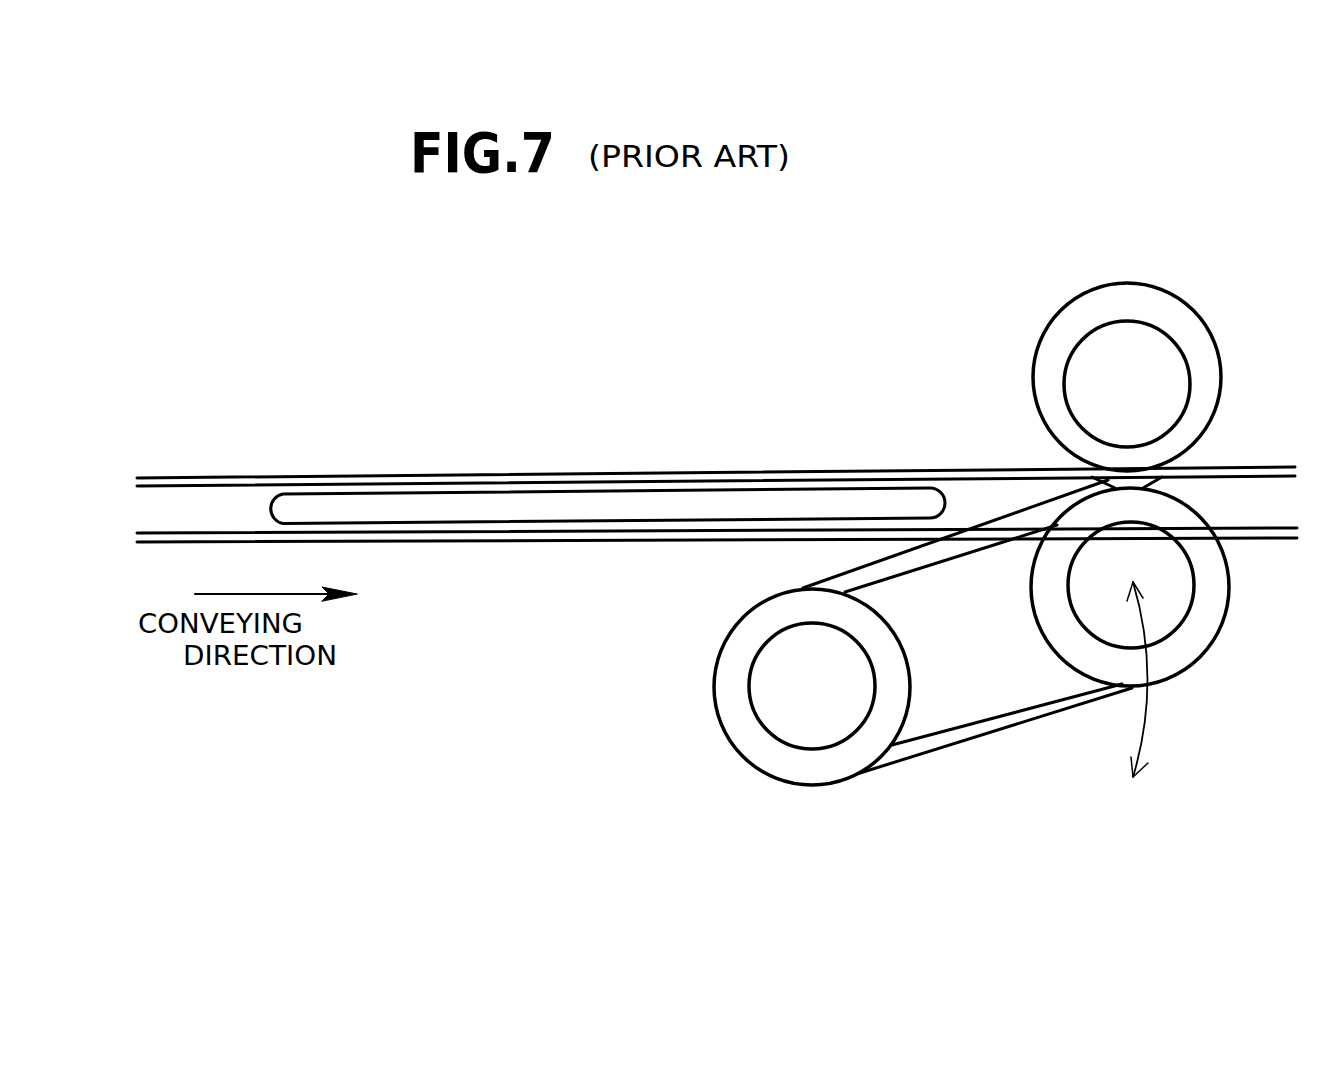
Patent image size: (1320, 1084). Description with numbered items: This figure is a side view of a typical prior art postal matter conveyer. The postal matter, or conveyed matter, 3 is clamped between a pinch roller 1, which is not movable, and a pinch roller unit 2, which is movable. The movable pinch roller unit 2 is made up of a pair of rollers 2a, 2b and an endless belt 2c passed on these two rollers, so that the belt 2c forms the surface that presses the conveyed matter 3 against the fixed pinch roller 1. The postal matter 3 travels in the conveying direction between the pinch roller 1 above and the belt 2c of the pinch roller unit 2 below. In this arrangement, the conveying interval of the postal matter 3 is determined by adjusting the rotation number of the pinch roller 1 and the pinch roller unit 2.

The pinch roller 1 is at (1072, 305).
The pinch roller unit 2 is at (1082, 672).
The roller 2a is at (1168, 622).
The roller 2b is at (803, 733).
The endless belt 2c is at (967, 735).
The postal matter 3 is at (533, 522).